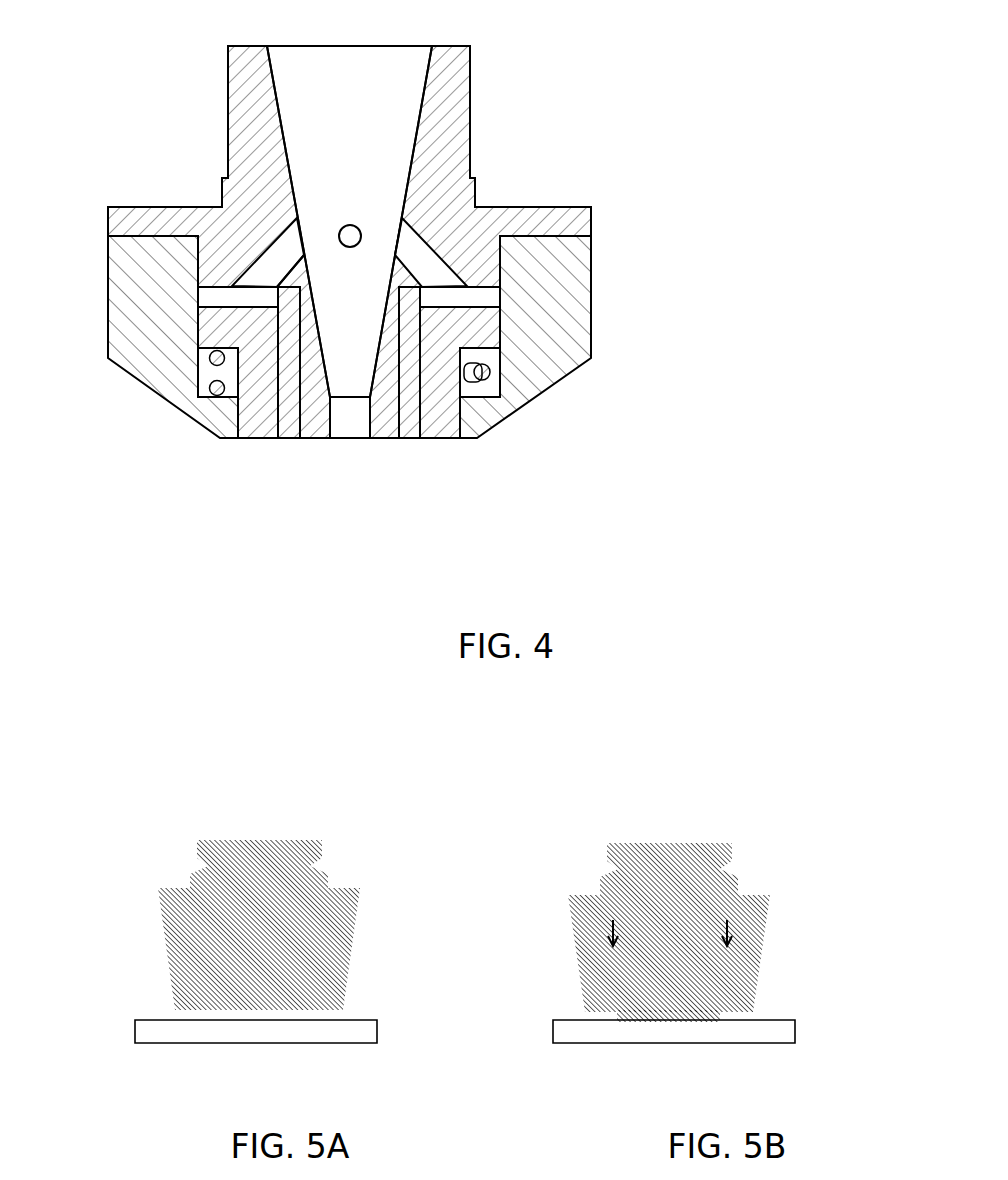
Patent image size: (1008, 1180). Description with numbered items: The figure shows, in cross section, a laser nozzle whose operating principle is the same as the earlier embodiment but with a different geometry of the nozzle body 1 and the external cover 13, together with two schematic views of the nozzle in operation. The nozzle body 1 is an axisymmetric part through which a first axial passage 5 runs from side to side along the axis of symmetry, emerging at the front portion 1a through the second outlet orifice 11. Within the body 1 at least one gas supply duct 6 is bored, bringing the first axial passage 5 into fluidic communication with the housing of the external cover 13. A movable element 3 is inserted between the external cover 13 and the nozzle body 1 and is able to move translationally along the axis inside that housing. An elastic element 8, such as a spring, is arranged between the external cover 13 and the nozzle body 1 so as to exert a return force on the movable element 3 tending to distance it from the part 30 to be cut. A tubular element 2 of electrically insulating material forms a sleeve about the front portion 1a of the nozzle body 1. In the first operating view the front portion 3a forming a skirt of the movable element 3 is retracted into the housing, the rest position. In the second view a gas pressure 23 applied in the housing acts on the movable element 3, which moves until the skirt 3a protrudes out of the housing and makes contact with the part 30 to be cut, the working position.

In FIG. 4, the nozzle body 1 is at (440, 190).
In FIG. 5A, the nozzle body 1 is at (315, 887).
In FIG. 5B, the nozzle body 1 is at (722, 886).
In FIG. 4, the front portion of the nozzle body 1a is at (387, 437).
In FIG. 4, the tubular element 2 is at (283, 432).
In FIG. 4, the movable element 3 is at (482, 323).
In FIG. 4, the front portion forming a skirt 3a is at (445, 408).
In FIG. 5B, the front portion forming a skirt 3a is at (617, 1013).
In FIG. 4, the first axial passage 5 is at (333, 154).
In FIG. 4, the gas supply duct 6 is at (350, 228).
In FIG. 4, the elastic element 8 is at (223, 362).
In FIG. 4, the second outlet orifice 11 is at (345, 430).
In FIG. 4, the external cover 13 is at (553, 291).
In FIG. 5A, the external cover 13 is at (360, 918).
In FIG. 5B, the external cover 13 is at (765, 922).
In FIG. 5B, the gas pressure 23 is at (605, 936).
In FIG. 5A, the part to be cut 30 is at (312, 1027).
In FIG. 5B, the part to be cut 30 is at (760, 1027).